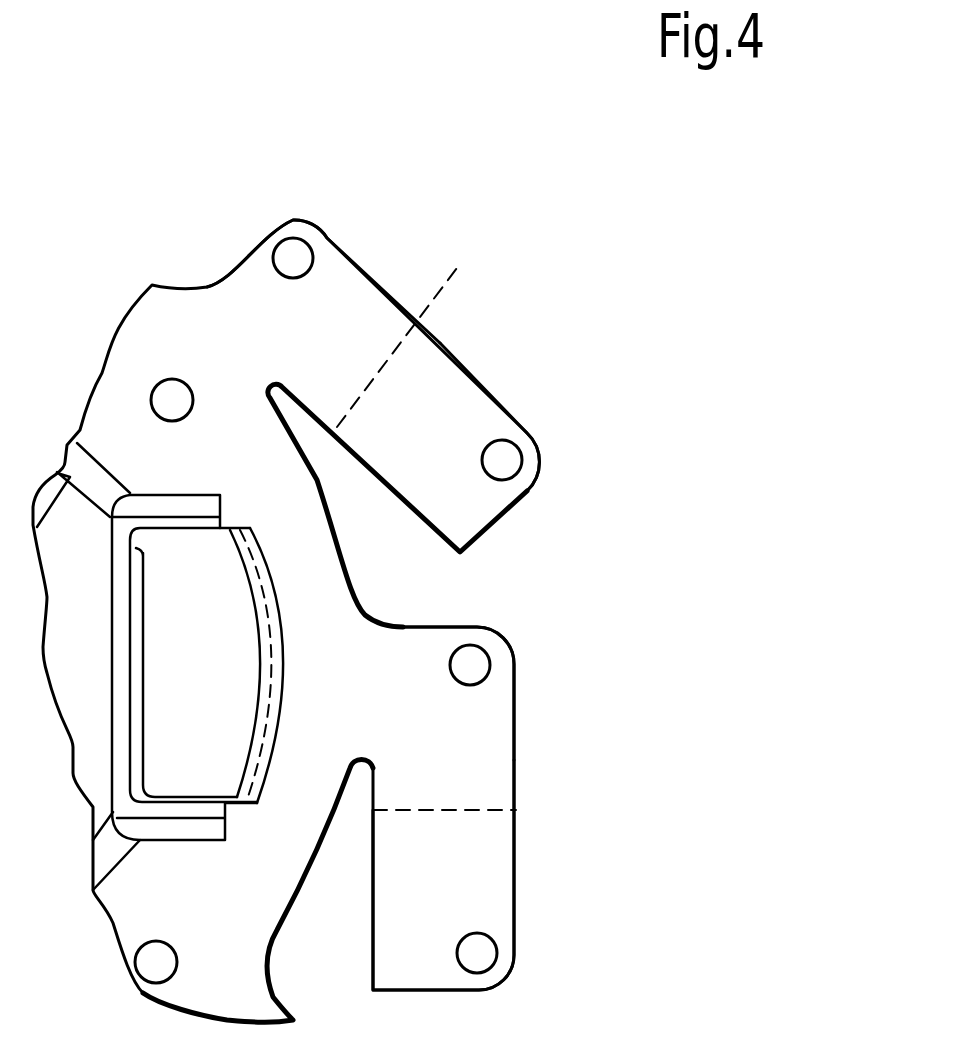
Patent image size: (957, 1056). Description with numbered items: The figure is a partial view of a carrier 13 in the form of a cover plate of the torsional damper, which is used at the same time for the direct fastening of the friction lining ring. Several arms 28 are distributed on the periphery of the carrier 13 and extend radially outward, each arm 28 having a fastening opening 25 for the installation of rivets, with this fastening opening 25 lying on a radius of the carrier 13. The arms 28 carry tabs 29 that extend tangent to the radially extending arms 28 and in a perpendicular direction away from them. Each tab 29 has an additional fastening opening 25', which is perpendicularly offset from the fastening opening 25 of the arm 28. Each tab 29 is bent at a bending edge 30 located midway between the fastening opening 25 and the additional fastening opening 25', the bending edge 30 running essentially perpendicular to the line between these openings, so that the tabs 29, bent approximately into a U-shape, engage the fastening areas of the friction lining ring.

The carrier 13 is at (293, 637).
The fastening opening 25 is at (446, 436).
The additional fastening opening 25' is at (553, 686).
The arm 28 is at (295, 206).
The tab 29 is at (490, 390).
The bending edge 30 is at (373, 385).